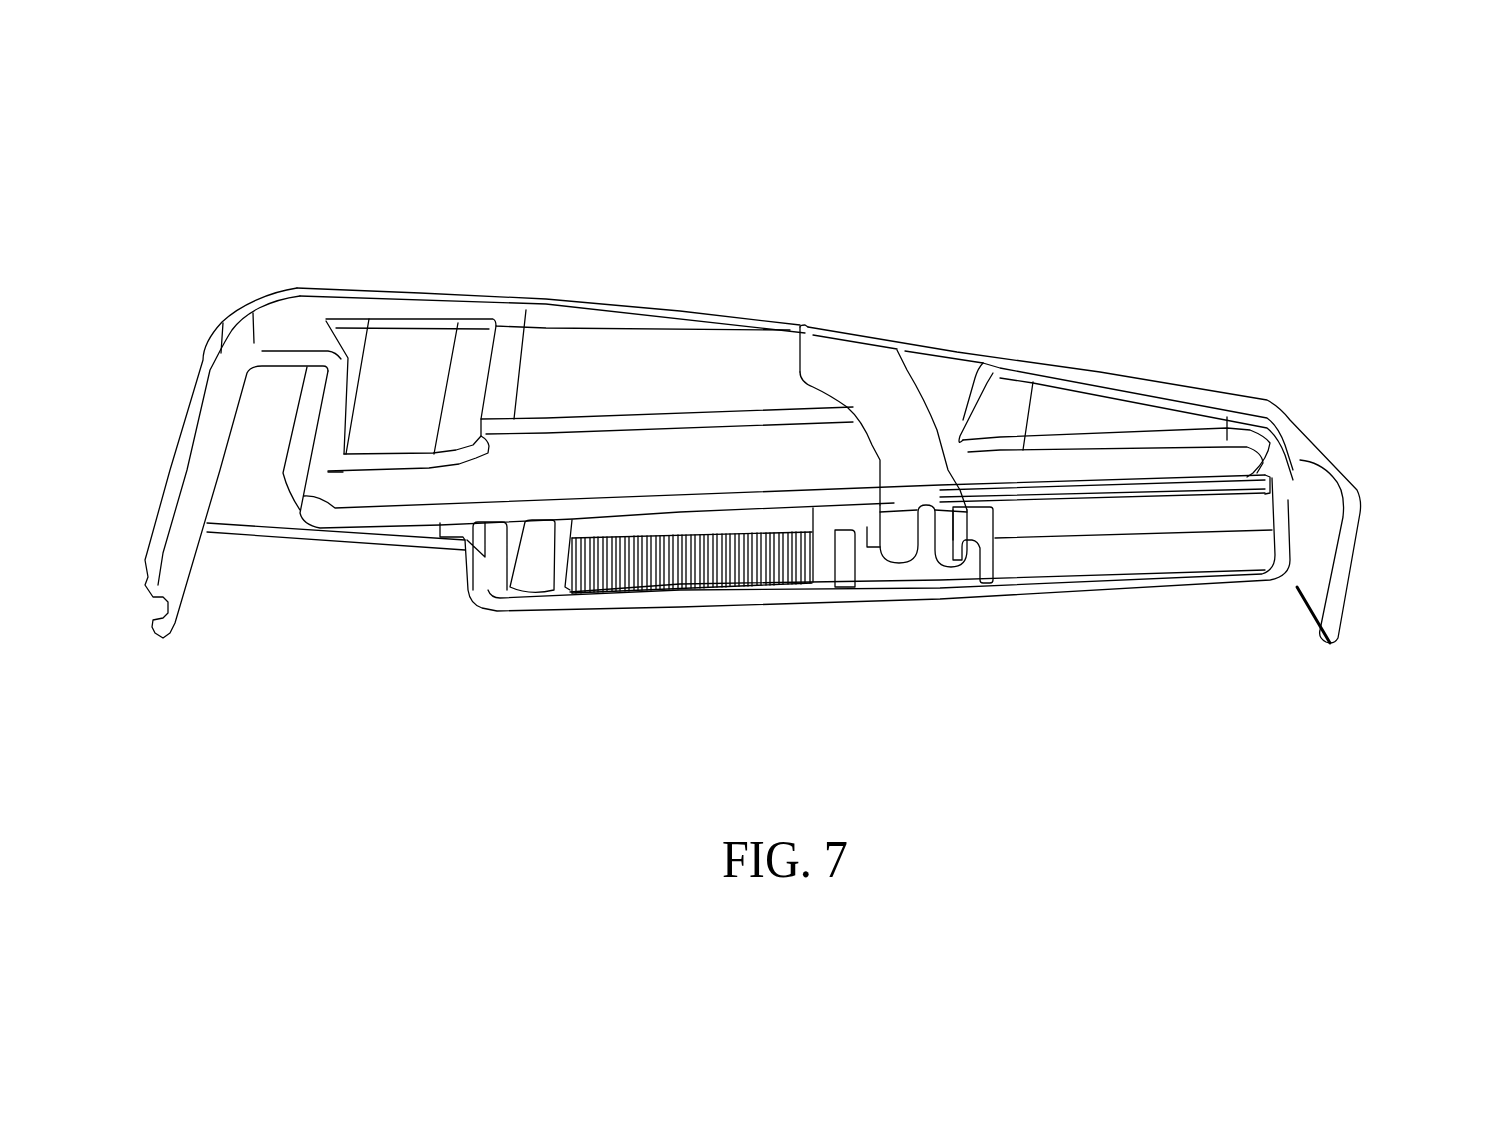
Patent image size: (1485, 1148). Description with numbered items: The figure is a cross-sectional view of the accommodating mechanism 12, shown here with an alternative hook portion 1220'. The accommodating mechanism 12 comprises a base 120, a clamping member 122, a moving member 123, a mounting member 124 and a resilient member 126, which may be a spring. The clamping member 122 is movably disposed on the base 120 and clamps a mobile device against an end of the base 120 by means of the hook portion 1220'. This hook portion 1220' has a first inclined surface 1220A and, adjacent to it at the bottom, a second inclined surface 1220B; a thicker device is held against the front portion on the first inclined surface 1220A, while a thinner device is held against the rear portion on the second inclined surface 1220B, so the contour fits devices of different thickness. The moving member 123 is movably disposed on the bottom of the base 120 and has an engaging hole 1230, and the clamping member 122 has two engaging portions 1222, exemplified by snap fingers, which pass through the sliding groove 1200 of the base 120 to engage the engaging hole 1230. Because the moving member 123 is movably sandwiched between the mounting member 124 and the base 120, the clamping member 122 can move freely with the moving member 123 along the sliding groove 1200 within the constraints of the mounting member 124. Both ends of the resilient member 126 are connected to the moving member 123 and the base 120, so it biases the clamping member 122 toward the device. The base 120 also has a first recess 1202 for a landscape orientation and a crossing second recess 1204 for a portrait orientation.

The accommodating mechanism 12 is at (1124, 186).
The base 120 is at (1357, 562).
The first recess 1202 is at (634, 350).
The second recess 1204 is at (1175, 406).
The clamping member 122 is at (942, 400).
The hook portion 1220' is at (881, 455).
The first inclined surface 1220A is at (793, 387).
The second inclined surface 1220B is at (880, 470).
The engaging portions 1222 is at (901, 565).
The moving member 123 is at (992, 560).
The engaging hole 1230 is at (968, 525).
The sliding groove 1200 is at (1195, 523).
The mounting member 124 is at (601, 620).
The resilient member 126 is at (714, 585).